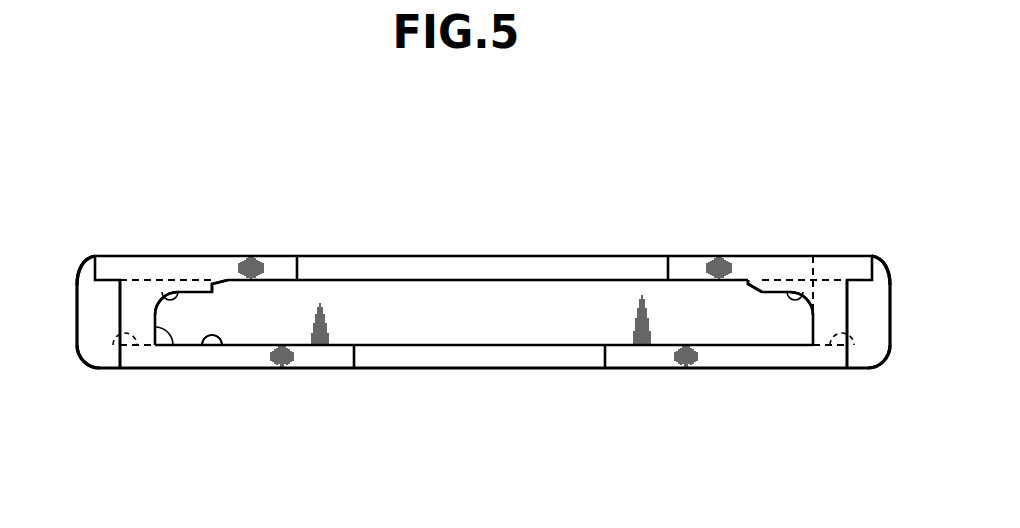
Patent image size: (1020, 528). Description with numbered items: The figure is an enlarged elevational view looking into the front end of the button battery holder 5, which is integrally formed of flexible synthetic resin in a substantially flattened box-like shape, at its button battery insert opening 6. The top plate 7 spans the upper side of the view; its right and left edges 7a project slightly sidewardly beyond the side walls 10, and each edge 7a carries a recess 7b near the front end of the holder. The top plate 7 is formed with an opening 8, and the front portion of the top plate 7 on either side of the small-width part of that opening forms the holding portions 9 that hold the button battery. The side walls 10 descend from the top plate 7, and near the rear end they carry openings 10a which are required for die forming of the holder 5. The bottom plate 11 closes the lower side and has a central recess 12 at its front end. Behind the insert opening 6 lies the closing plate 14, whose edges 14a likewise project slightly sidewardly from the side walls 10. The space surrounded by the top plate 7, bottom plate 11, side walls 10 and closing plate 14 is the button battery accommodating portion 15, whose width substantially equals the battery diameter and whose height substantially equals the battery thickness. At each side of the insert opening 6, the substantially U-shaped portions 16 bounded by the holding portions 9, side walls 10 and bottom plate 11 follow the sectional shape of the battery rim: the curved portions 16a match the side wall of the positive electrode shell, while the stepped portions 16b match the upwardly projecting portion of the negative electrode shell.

The button battery holder 5 is at (705, 255).
The button battery insert opening 6 is at (222, 347).
The top plate 7 is at (460, 268).
The edge of the top plate 7a is at (84, 272).
The recess 7b is at (112, 277).
The opening 8 is at (157, 302).
The holding portion 9 is at (287, 262).
The side wall 10 is at (121, 320).
The opening of the side wall 10a is at (115, 355).
The bottom plate 11 is at (330, 352).
The central recess 12 is at (356, 354).
The closing plate 14 is at (77, 283).
The edge of the closing plate 14a is at (82, 349).
The button battery accommodating portion 15 is at (505, 329).
The substantially U-shaped portion 16 is at (175, 346).
The curved portion 16a is at (178, 293).
The stepped portion 16b is at (227, 280).